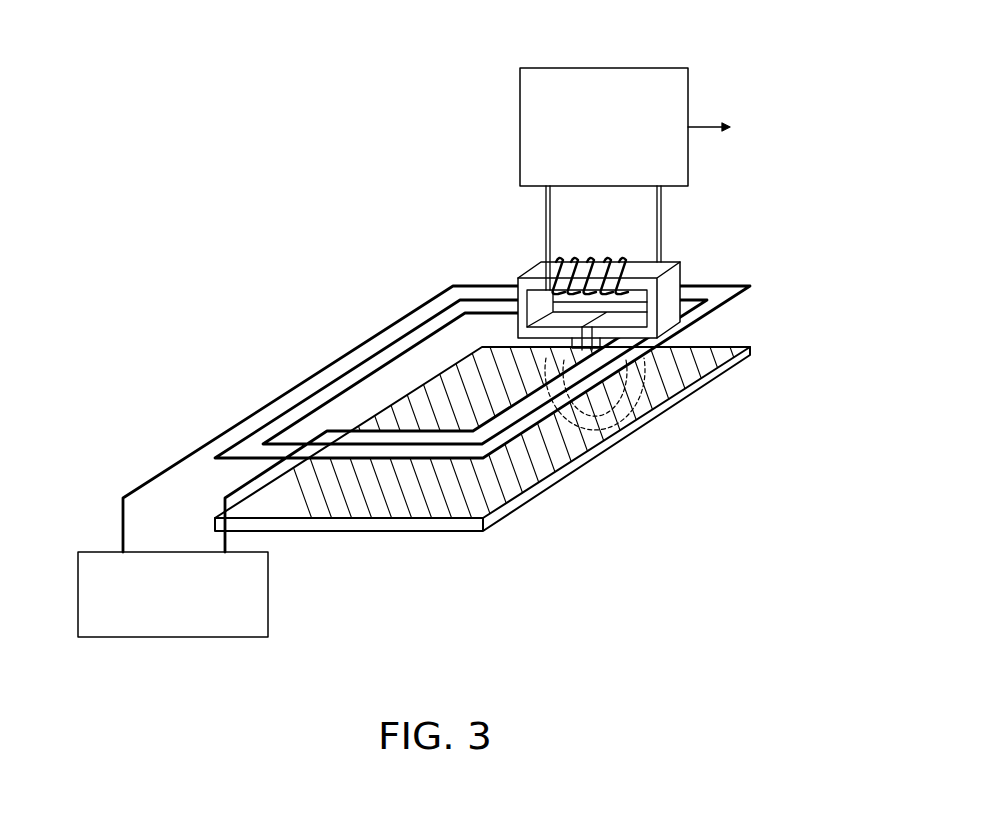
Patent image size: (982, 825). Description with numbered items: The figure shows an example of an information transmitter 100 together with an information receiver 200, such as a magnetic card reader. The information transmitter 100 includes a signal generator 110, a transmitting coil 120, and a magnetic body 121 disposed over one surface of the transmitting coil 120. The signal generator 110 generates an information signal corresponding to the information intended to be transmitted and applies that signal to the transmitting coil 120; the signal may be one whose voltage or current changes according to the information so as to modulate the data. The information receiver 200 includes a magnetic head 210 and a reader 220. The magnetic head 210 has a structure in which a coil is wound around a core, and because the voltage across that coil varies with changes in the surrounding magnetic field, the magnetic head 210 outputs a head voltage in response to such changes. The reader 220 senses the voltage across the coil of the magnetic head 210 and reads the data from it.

The information transmitter 100 is at (70, 635).
The signal generator 110 is at (222, 638).
The transmitting coil 120 is at (355, 346).
The magnetic body 121 is at (530, 480).
The information receiver 200 is at (797, 62).
The magnetic head 210 is at (682, 277).
The reader 220 is at (640, 67).